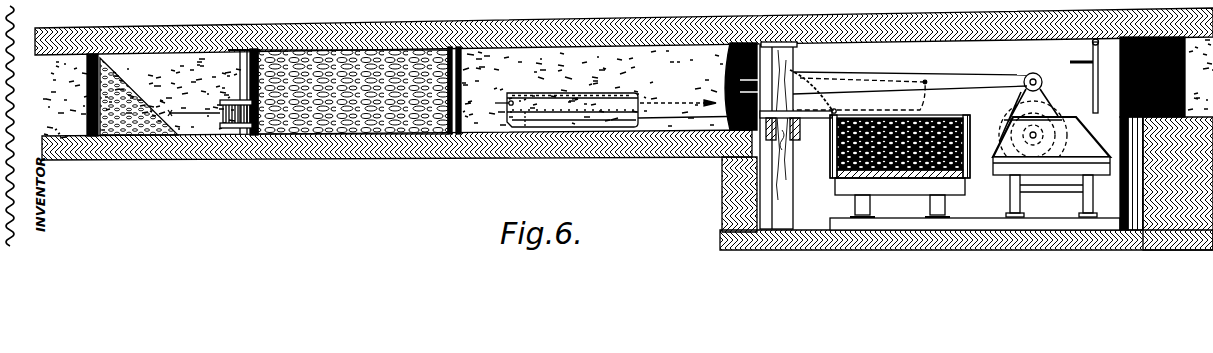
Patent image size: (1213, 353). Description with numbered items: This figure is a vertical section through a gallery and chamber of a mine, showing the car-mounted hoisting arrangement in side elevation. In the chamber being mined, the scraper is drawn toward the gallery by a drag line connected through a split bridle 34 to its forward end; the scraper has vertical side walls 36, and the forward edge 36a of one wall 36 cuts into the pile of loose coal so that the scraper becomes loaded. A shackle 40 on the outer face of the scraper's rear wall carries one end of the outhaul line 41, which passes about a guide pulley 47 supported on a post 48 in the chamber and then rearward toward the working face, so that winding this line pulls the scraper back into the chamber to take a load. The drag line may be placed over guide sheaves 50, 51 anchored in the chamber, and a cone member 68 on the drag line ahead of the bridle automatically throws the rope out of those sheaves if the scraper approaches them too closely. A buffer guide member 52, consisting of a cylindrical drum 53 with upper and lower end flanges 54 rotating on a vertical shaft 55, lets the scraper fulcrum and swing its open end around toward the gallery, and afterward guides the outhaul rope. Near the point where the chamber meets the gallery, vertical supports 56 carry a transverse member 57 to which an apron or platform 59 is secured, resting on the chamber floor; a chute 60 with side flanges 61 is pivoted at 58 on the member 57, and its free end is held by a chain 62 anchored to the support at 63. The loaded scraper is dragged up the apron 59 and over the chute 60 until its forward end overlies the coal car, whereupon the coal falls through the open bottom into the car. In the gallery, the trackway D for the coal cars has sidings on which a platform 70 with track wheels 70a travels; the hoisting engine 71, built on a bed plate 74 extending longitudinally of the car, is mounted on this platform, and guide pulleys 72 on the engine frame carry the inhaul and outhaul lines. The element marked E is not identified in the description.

The split bridle 34 is at (666, 105).
The vertical side wall 36 is at (628, 88).
The forward edge of vertical wall 36a is at (642, 126).
The shackle 40 is at (508, 106).
The outhaul line 41 is at (563, 113).
The guide pulley 47 is at (443, 134).
The post 48 is at (447, 50).
The guide sheave 50 is at (178, 118).
The guide sheave 51 is at (240, 105).
The buffer guide member 52 is at (232, 126).
The cylindrical drum 53 is at (222, 118).
The end flange 54 is at (236, 136).
The shaft 55 is at (238, 58).
The vertical support 56 is at (793, 198).
The transverse member 57 is at (742, 160).
The pivot 58 is at (726, 181).
The apron or platform 59 is at (745, 44).
The chute 60 is at (805, 119).
The side flange 61 is at (868, 102).
The chain 62 is at (800, 78).
The chain anchorage 63 is at (792, 72).
The trackway D is at (833, 161).
The floor sill E is at (975, 216).
The cone member 68 is at (697, 128).
The platform 70 is at (1140, 179).
The track wheel 70a is at (1021, 208).
The hoisting engine 71 is at (1012, 101).
The guide pulley 72 is at (1035, 73).
The bed plate 74 is at (1003, 176).